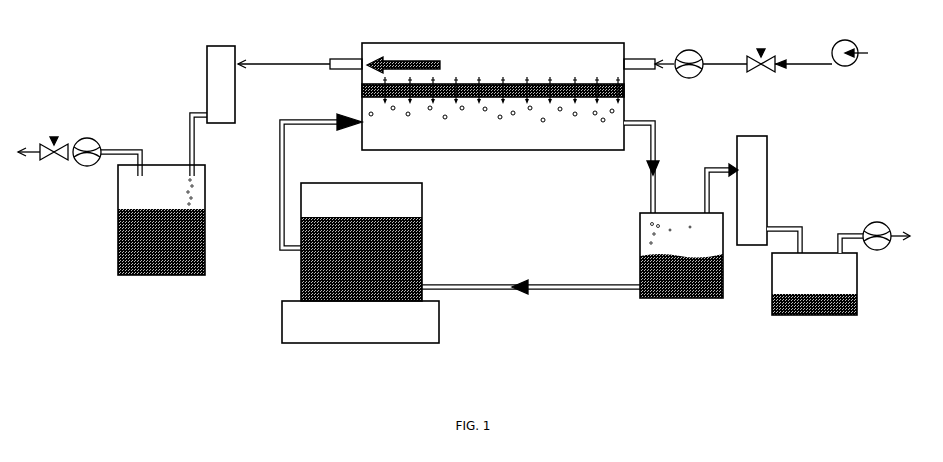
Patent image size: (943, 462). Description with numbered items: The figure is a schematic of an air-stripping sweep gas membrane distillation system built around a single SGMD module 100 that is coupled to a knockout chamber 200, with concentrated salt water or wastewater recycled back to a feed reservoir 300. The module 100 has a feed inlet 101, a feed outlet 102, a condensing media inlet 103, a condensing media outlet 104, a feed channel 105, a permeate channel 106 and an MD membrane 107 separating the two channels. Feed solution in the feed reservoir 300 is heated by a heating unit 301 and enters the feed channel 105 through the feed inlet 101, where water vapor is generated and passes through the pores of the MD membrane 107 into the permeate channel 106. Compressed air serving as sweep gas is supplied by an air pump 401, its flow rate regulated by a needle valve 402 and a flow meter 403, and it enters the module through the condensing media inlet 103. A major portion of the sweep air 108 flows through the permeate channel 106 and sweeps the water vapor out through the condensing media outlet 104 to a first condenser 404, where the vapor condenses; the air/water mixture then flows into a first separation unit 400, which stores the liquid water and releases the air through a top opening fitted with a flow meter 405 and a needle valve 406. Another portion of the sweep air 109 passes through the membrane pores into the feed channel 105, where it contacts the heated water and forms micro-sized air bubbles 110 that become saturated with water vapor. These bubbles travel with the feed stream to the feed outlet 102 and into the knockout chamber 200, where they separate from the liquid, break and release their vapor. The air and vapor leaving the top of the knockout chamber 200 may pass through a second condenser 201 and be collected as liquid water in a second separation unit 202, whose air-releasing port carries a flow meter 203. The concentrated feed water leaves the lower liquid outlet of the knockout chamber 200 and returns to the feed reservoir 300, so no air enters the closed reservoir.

The SGMD module 100 is at (493, 85).
The feed inlet 101 is at (322, 174).
The feed outlet 102 is at (641, 158).
The condensing media inlet 103 is at (649, 57).
The condensing media outlet 104 is at (300, 57).
The feed channel 105 is at (493, 129).
The permeate channel 106 is at (493, 64).
The MD membrane 107 is at (362, 90).
The major portion of the sweep air 108 is at (403, 59).
The portion of the sweep air 109 is at (618, 79).
The micro-sized air bubbles 110 is at (602, 122).
The knockout chamber 200 is at (580, 239).
The second condenser 201 is at (768, 194).
The second separation unit 202 is at (817, 286).
The flow meter 203 is at (896, 228).
The feed reservoir 300 is at (361, 242).
The heating unit 301 is at (360, 322).
The first separation unit 400 is at (154, 207).
The air pump 401 is at (850, 43).
The needle valve 402 is at (789, 53).
The flow meter 403 is at (711, 67).
The first condenser 404 is at (221, 84).
The flow meter 405 is at (87, 155).
The needle valve 406 is at (43, 139).